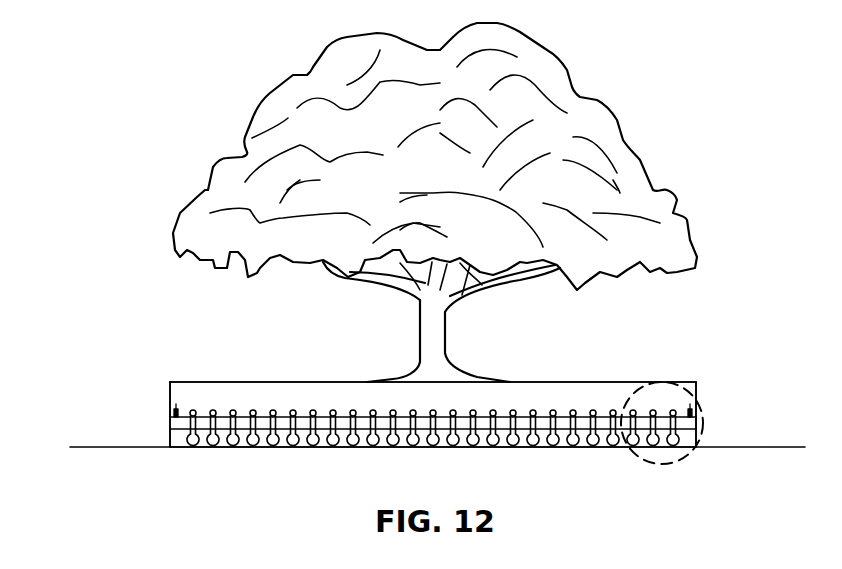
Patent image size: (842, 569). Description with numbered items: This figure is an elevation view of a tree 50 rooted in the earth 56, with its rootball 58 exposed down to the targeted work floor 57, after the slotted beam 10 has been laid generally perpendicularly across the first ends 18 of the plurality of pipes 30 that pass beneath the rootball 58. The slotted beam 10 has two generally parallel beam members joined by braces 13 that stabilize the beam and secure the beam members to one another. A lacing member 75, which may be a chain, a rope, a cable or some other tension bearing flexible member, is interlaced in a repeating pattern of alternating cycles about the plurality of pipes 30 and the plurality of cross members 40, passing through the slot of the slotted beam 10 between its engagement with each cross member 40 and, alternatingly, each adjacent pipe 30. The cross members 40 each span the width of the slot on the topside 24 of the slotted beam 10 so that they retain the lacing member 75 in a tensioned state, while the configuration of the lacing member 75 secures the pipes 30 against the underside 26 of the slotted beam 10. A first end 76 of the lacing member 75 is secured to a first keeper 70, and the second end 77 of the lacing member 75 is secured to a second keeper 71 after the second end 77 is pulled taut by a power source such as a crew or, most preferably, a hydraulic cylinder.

The tree 50 is at (623, 58).
The slotted beam 10 is at (686, 405).
The braces 13 is at (688, 457).
The first ends 18 is at (540, 449).
The topside 24 is at (305, 415).
The underside 26 is at (383, 430).
The pipes 30 is at (503, 424).
The cross members 40 is at (193, 410).
The earth 56 is at (250, 382).
The targeted work floor 57 is at (82, 447).
The rootball 58 is at (633, 390).
The first keeper 70 is at (698, 408).
The second keeper 71 is at (172, 410).
The lacing member 75 is at (585, 425).
The first end 76 is at (694, 409).
The second end 77 is at (175, 409).